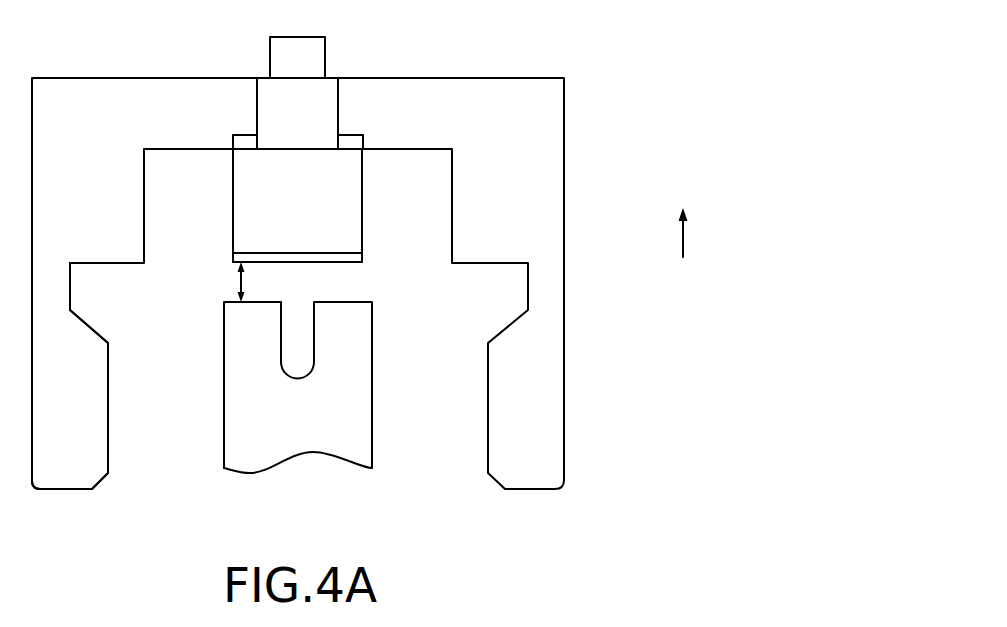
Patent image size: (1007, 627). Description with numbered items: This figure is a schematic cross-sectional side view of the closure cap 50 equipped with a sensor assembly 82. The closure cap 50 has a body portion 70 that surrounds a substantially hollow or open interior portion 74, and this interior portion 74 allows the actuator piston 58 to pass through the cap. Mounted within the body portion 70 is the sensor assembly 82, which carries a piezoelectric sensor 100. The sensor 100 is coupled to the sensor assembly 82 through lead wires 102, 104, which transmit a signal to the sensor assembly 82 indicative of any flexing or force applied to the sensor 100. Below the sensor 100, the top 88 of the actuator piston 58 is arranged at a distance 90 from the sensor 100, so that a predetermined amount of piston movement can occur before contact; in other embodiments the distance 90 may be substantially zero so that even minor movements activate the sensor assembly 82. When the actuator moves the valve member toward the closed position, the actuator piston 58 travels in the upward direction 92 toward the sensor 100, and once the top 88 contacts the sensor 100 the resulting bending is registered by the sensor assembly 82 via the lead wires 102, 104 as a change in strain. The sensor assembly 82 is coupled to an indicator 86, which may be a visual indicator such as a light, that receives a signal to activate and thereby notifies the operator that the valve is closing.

The closure cap 50 is at (628, 57).
The actuator piston 58 is at (313, 424).
The body portion 70 is at (564, 412).
The interior portion 74 is at (145, 507).
The sensor assembly 82 is at (362, 106).
The indicator 86 is at (300, 62).
The top of the actuator piston 88 is at (352, 302).
The distance 90 is at (238, 282).
The upward direction 92 is at (695, 236).
The piezoelectric sensor 100 is at (378, 231).
The lead wire 102 is at (362, 218).
The lead wire 104 is at (233, 240).